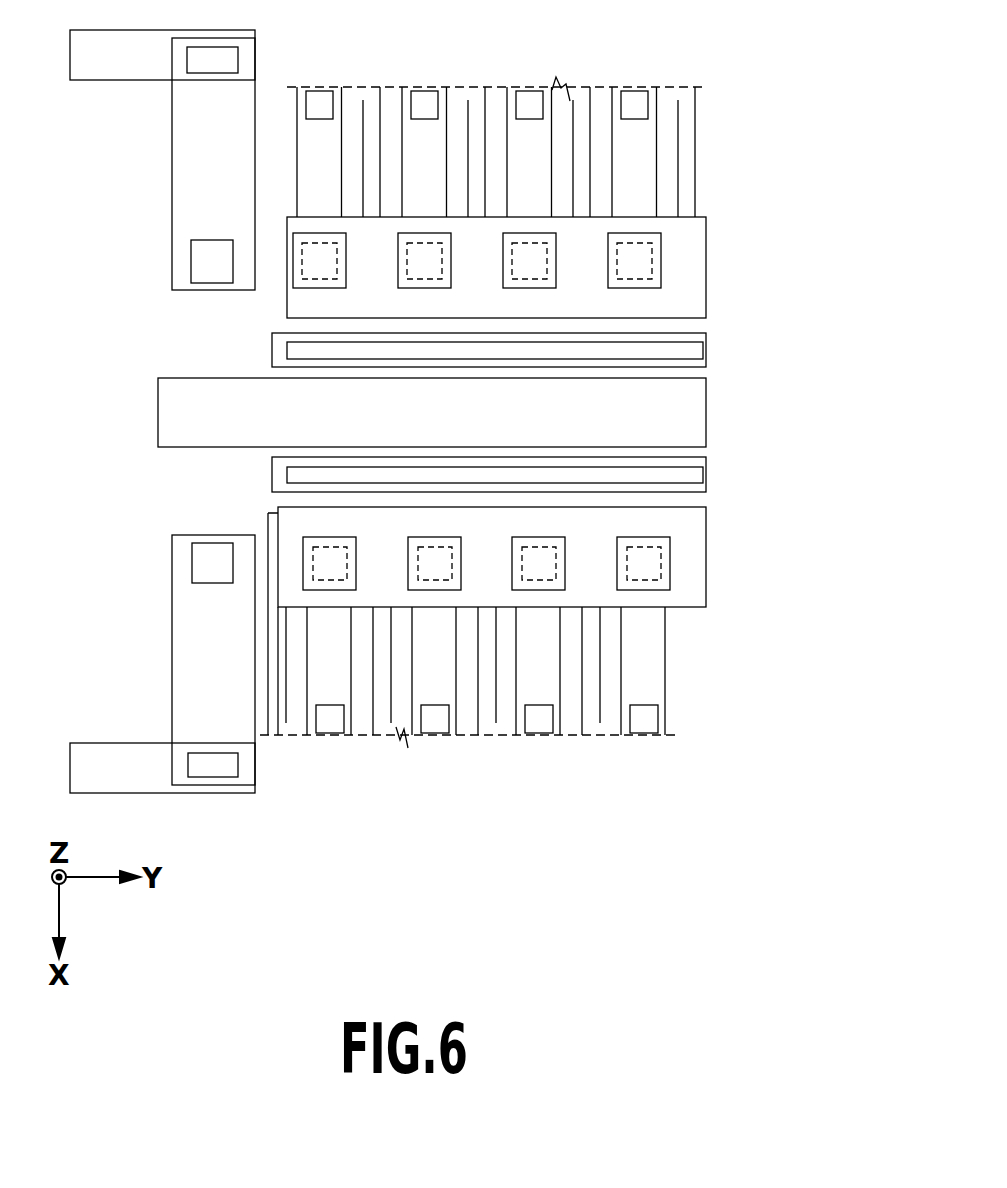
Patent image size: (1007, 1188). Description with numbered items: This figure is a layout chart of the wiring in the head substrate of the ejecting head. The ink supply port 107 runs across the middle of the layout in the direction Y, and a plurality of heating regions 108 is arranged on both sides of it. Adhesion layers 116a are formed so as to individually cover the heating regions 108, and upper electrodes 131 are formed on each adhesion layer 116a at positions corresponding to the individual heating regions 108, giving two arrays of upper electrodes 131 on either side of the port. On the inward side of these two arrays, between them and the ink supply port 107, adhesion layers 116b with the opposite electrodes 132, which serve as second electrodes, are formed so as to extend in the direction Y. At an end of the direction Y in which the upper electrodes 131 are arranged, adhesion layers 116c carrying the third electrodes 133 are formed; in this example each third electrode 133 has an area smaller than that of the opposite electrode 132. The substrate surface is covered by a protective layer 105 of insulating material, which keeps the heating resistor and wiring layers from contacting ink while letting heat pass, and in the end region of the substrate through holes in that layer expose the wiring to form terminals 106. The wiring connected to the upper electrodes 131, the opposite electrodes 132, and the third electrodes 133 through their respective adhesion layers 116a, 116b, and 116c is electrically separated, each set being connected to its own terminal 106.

The protective layer 105 is at (687, 167).
The terminal 106 is at (645, 722).
The ink supply port 107 is at (685, 414).
The heating region 108 is at (323, 583).
The adhesion layer 116a is at (686, 262).
The adhesion layer 116b is at (703, 363).
The adhesion layer 116c is at (193, 170).
The upper electrode 131 is at (668, 568).
The opposite electrode 132 is at (703, 352).
The third electrode 133 is at (208, 265).